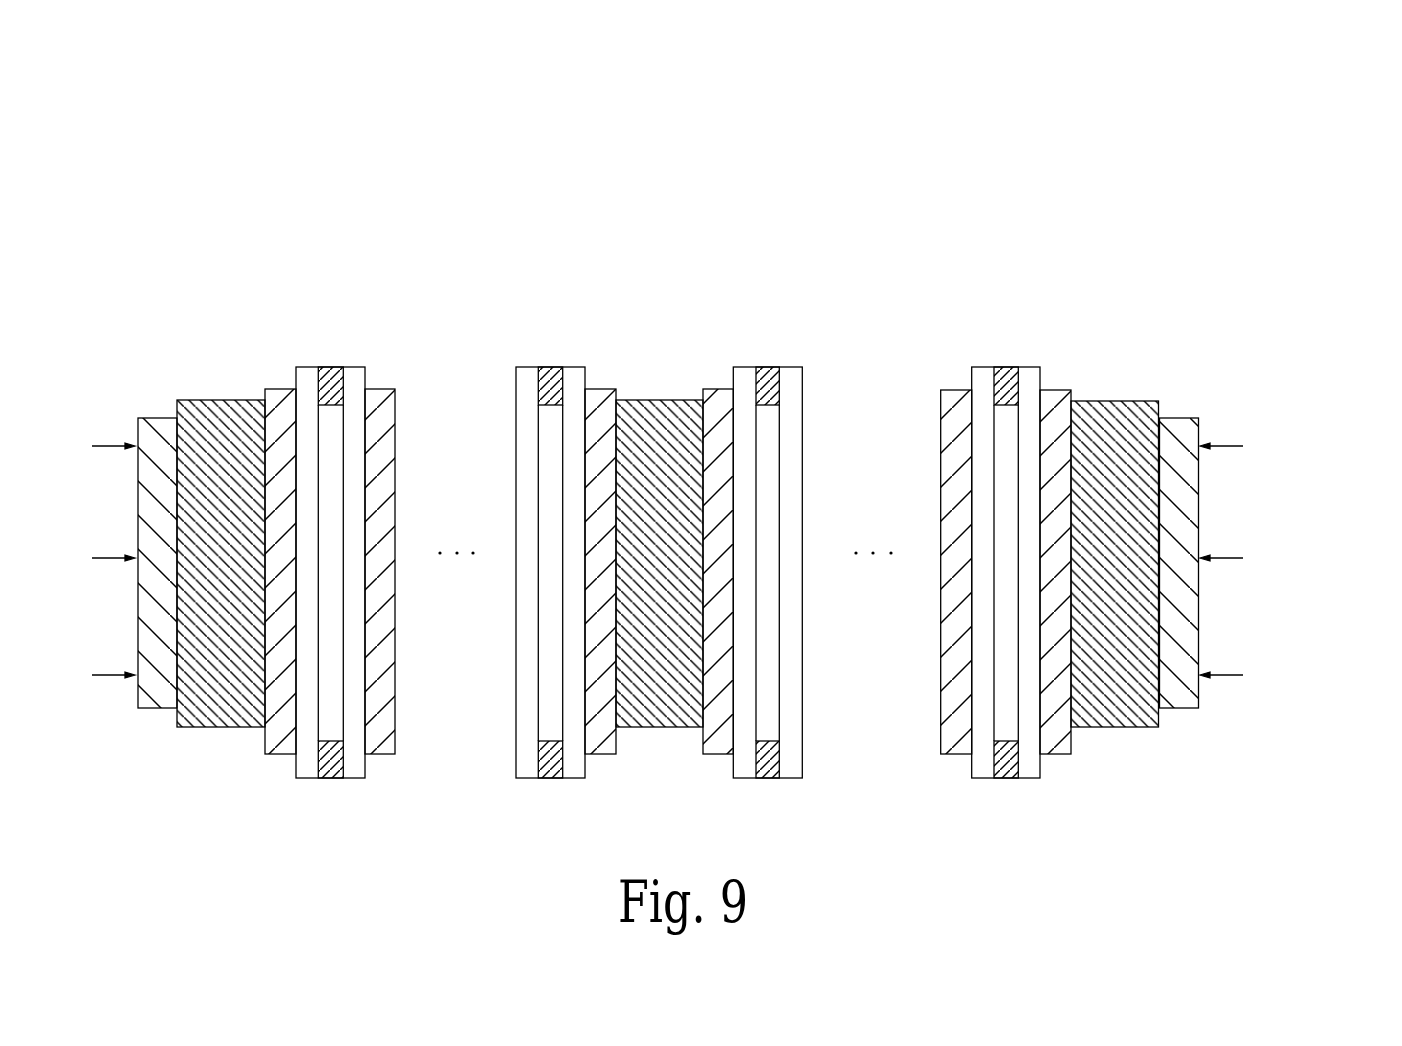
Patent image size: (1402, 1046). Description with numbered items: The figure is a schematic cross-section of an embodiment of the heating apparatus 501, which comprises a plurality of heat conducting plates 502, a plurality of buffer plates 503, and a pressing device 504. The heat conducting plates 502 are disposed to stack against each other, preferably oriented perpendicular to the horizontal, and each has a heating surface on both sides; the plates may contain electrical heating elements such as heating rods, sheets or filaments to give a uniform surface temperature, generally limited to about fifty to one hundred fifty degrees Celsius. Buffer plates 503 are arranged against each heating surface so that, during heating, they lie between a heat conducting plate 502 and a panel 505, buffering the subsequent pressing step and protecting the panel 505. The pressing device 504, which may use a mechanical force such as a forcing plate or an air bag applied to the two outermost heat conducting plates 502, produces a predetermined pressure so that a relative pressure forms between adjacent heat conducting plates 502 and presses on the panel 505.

The heating apparatus 501 is at (738, 433).
The heat conducting plate 502 is at (1115, 392).
The buffer plate 503 is at (953, 375).
The pressing device 504 is at (1192, 415).
The panel 505 is at (552, 355).